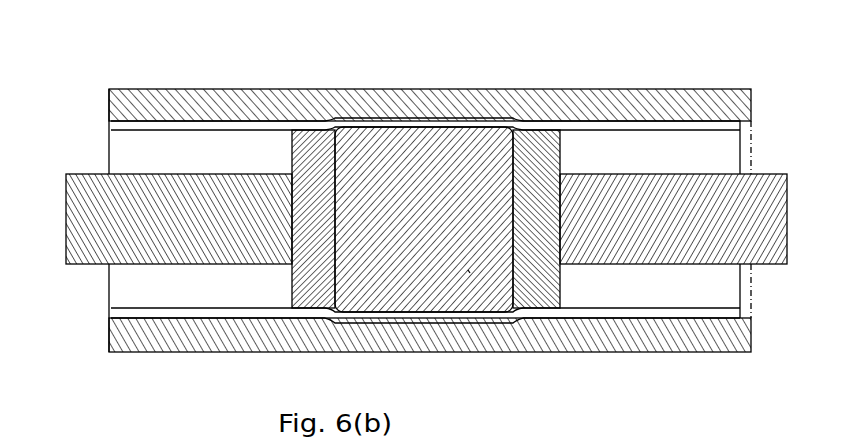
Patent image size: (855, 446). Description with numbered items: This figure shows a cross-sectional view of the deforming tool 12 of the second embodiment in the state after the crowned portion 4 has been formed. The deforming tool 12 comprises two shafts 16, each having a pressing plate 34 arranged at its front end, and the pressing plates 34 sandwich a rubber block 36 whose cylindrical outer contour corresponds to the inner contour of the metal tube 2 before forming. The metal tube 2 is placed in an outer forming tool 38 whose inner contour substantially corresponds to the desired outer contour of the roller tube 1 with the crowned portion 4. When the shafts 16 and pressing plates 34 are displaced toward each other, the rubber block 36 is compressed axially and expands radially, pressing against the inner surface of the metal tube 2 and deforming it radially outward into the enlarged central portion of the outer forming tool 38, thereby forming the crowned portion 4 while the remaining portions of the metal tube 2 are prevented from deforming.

The roller tube 1 is at (196, 130).
The metal tube 2 is at (710, 125).
The crowned portion 4 is at (423, 122).
The deforming tool 12 is at (88, 150).
The shafts 16 is at (108, 233).
The pressing plates 34 is at (310, 150).
The rubber block 36 is at (468, 270).
The outer forming tool 38 is at (642, 110).